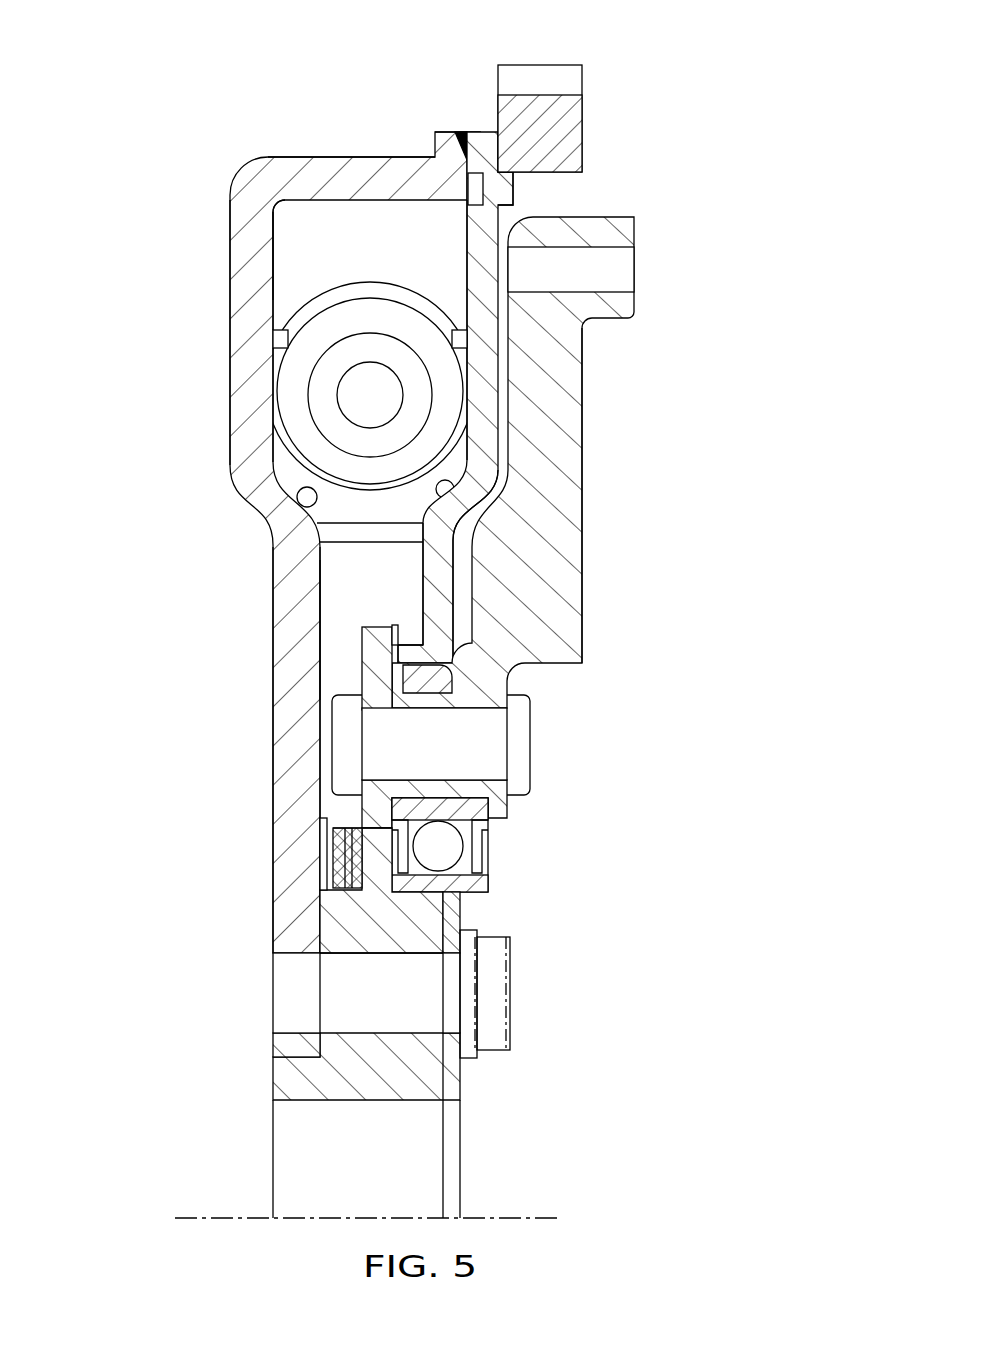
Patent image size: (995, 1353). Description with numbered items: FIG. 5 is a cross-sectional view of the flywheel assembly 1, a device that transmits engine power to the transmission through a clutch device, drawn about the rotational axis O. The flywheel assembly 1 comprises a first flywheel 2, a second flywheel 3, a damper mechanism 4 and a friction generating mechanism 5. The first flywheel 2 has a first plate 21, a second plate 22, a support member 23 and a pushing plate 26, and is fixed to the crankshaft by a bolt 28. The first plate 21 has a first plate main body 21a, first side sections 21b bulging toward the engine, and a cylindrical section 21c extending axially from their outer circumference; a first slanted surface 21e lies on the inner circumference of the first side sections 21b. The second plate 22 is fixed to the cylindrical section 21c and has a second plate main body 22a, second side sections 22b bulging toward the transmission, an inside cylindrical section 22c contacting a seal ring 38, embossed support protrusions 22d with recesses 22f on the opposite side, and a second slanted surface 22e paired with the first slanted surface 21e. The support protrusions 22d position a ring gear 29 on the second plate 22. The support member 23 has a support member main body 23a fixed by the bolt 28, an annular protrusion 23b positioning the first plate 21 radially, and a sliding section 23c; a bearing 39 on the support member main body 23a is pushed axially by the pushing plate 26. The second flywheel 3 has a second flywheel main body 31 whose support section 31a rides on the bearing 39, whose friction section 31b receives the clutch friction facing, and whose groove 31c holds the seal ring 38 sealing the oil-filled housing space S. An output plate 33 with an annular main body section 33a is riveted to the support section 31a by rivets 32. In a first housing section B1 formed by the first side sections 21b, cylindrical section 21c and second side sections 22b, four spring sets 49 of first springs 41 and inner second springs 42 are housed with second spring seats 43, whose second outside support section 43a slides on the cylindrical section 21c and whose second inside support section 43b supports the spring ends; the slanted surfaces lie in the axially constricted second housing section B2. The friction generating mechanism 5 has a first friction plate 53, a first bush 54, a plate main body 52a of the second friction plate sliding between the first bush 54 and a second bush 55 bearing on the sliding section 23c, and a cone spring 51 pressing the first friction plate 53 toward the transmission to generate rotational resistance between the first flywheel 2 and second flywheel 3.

The flywheel assembly 1 is at (632, 98).
The first flywheel 2 is at (245, 166).
The second flywheel 3 is at (455, 509).
The damper mechanism 4 is at (287, 386).
The friction generating mechanism 5 is at (241, 807).
The first plate 21 is at (263, 540).
The first plate main body 21a is at (287, 585).
The first side sections 21b is at (253, 240).
The cylindrical section 21c is at (370, 180).
The first slanted surface 21e is at (300, 494).
The second plate 22 is at (505, 370).
The second plate main body 22a is at (450, 588).
The second side sections 22b is at (477, 410).
The inside cylindrical section 22c is at (412, 652).
The support protrusions 22d is at (508, 190).
The second slanted surface 22e is at (445, 517).
The recesses 22f is at (470, 128).
The support member 23 is at (318, 908).
The support member main body 23a is at (335, 930).
The annular protrusion 23b is at (290, 1076).
The sliding section 23c is at (378, 882).
The pushing plate 26 is at (458, 1068).
The bolt 28 is at (490, 993).
The ring gear 29 is at (573, 133).
The second flywheel main body 31 is at (596, 556).
The support section 31a is at (465, 790).
The friction section 31b is at (560, 472).
The groove 31c is at (362, 685).
The rivets 32 is at (473, 742).
The output plate 33 is at (358, 641).
The main body section 33a is at (390, 648).
The seal ring 38 is at (455, 683).
The bearing 39 is at (493, 850).
The first springs 41 is at (297, 372).
The second springs 42 is at (332, 418).
The second spring seats 43 is at (272, 208).
The second outside support section 43a is at (300, 272).
The second inside support section 43b is at (290, 470).
The spring sets 49 is at (272, 395).
The cone spring 51 is at (323, 832).
The plate main body 52a is at (328, 818).
The first friction plate 53 is at (335, 880).
The first bush 54 is at (342, 846).
The second bush 55 is at (455, 915).
The first housing section B1 is at (300, 198).
The second housing section B2 is at (312, 609).
The housing space S is at (466, 195).
The axis O is at (368, 1218).